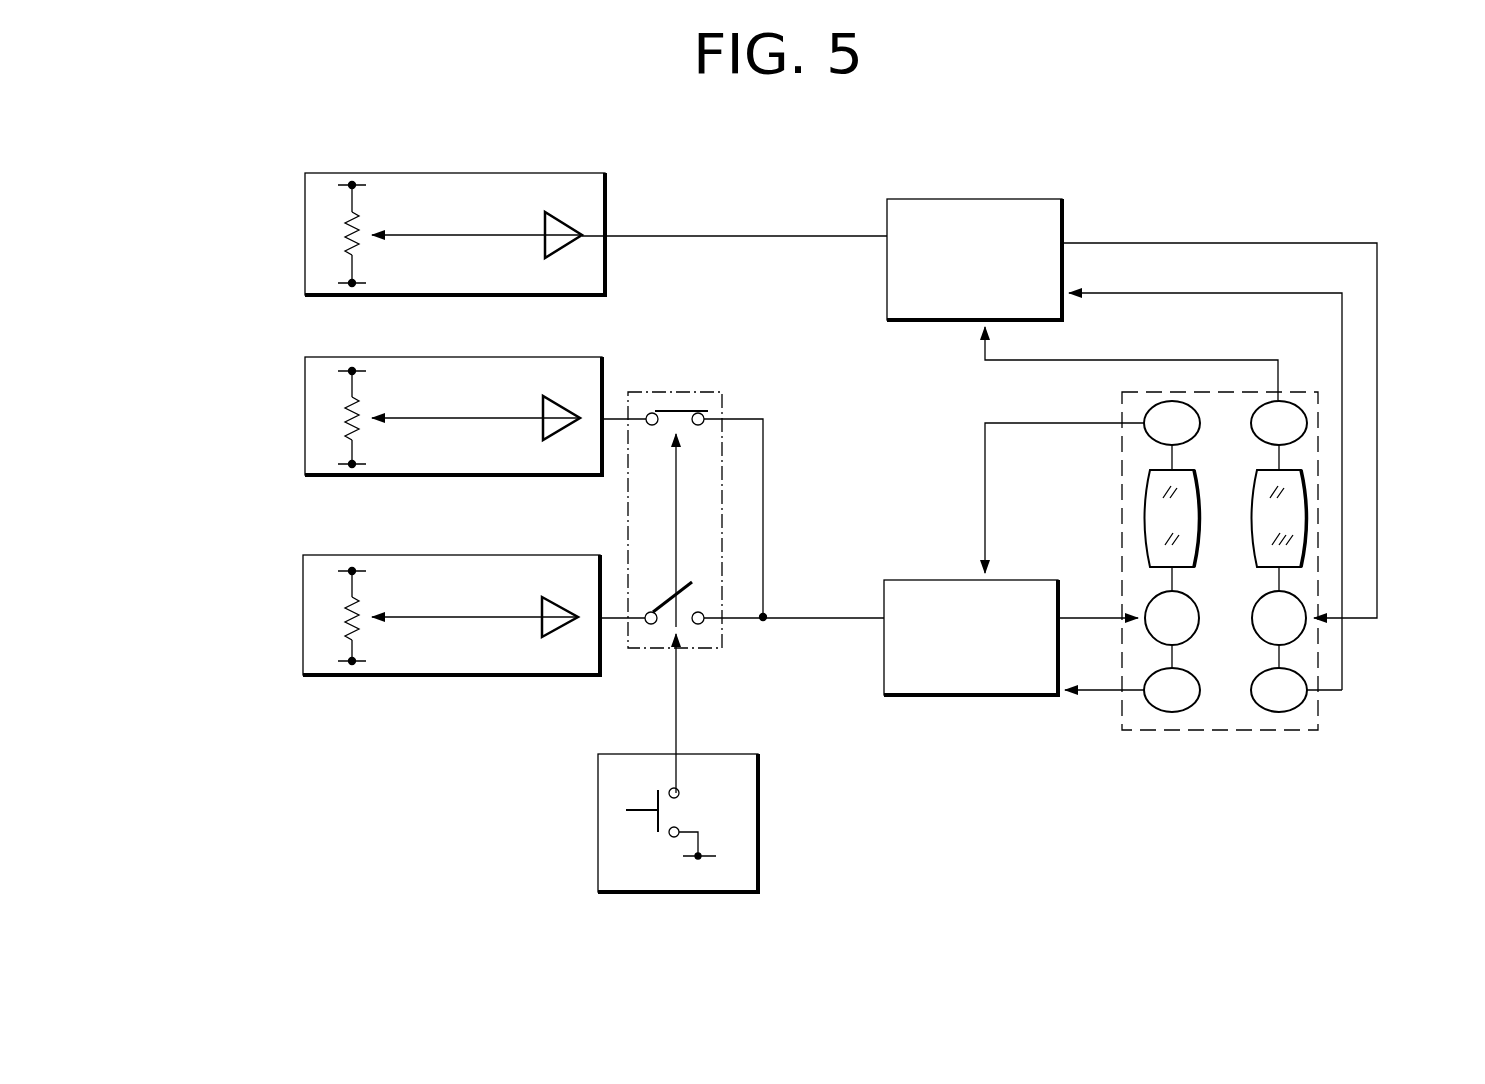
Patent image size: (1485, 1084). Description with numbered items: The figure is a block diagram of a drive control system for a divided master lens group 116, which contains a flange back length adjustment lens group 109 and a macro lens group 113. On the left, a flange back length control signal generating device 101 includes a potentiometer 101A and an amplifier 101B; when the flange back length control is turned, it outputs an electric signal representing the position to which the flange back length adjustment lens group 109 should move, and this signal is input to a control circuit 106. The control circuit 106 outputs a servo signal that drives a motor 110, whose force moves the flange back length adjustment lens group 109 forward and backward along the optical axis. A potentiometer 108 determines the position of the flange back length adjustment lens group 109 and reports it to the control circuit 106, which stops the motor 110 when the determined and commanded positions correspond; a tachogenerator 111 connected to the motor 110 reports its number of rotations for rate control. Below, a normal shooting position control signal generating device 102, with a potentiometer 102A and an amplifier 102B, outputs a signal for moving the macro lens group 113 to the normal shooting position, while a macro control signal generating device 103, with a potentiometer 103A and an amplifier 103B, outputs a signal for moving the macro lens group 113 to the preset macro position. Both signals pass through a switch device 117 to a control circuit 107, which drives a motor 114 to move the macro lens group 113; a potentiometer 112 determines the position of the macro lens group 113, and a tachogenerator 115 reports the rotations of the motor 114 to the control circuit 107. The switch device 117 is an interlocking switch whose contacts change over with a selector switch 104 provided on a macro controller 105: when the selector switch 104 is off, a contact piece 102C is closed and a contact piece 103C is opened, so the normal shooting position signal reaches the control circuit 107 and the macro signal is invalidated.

The flange back length control signal generating device 101 is at (592, 205).
The potentiometer 101A is at (352, 200).
The amplifier 101B is at (568, 245).
The normal shooting position control signal generating device 102 is at (448, 378).
The potentiometer 102A is at (352, 384).
The amplifier 102B is at (562, 405).
The contact piece 102C is at (668, 410).
The macro control signal generating device 103 is at (408, 573).
The potentiometer 103A is at (352, 583).
The amplifier 103B is at (552, 597).
The contact piece 103C is at (690, 583).
The selector switch 104 is at (668, 835).
The macro controller 105 is at (758, 790).
The control circuit 106 is at (936, 212).
The control circuit 107 is at (942, 683).
The potentiometer 108 is at (1292, 402).
The flange back length adjustment lens group 109 is at (1305, 515).
The motor 110 is at (1304, 628).
The tachogenerator 111 is at (1298, 708).
The potentiometer 112 is at (1140, 412).
The macro lens group 113 is at (1150, 500).
The motor 114 is at (1150, 600).
The tachogenerator 115 is at (1170, 712).
The master lens group 116 is at (1202, 732).
The switch device 117 is at (712, 650).